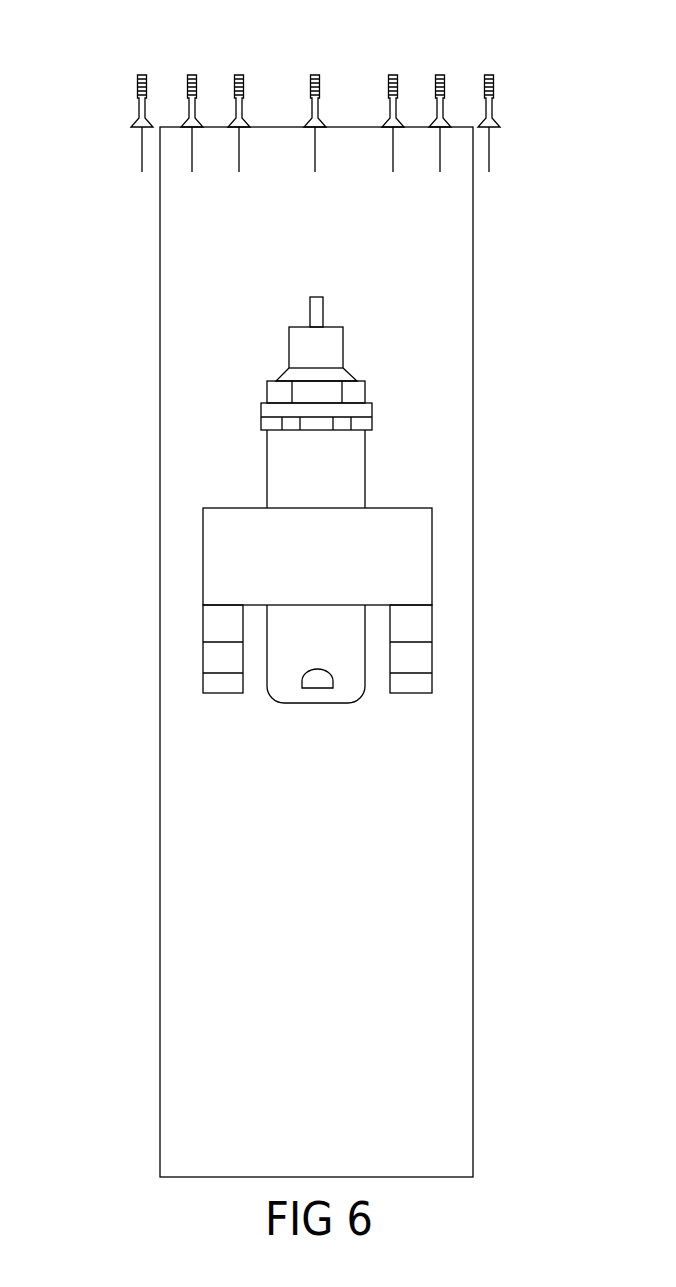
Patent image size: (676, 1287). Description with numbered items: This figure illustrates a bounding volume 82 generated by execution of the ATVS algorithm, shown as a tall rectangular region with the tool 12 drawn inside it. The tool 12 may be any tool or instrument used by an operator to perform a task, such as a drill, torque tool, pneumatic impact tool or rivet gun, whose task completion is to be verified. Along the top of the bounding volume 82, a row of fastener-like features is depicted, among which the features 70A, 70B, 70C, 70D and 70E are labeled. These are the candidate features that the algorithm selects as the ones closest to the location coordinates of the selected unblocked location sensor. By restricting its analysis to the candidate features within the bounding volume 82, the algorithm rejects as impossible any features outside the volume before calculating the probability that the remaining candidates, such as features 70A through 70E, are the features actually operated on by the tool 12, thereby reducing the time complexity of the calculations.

The tool 12 is at (417, 552).
The bounding volume 82 is at (160, 1077).
The feature 70A is at (440, 74).
The feature 70B is at (393, 74).
The feature 70C is at (315, 74).
The feature 70D is at (239, 74).
The feature 70E is at (192, 74).